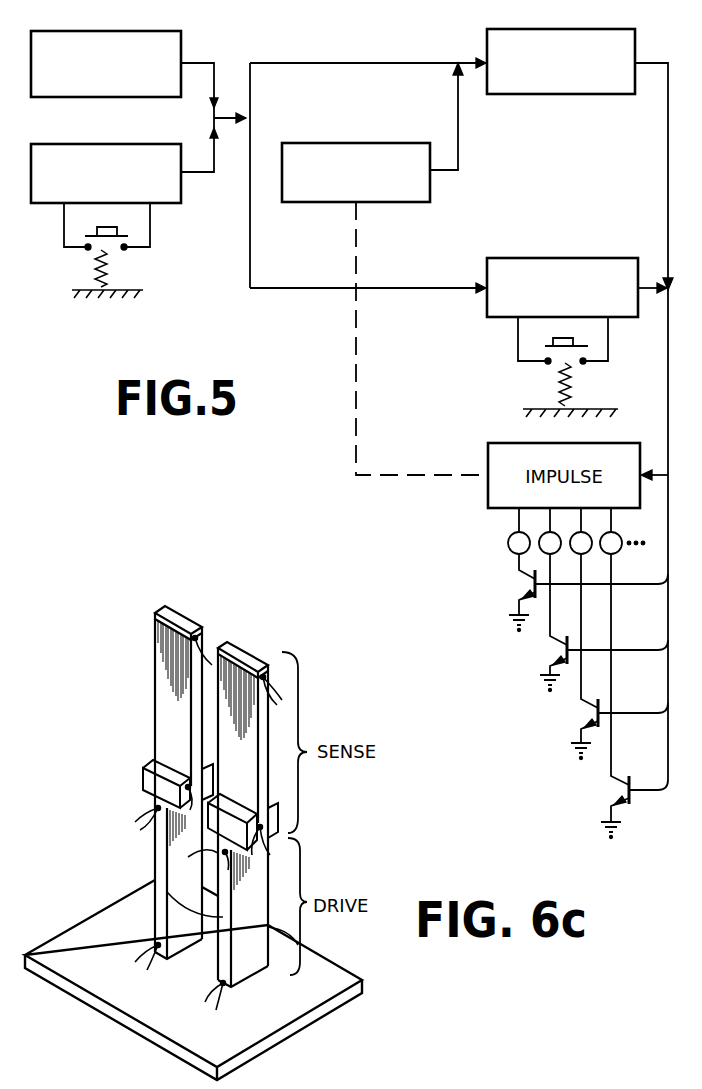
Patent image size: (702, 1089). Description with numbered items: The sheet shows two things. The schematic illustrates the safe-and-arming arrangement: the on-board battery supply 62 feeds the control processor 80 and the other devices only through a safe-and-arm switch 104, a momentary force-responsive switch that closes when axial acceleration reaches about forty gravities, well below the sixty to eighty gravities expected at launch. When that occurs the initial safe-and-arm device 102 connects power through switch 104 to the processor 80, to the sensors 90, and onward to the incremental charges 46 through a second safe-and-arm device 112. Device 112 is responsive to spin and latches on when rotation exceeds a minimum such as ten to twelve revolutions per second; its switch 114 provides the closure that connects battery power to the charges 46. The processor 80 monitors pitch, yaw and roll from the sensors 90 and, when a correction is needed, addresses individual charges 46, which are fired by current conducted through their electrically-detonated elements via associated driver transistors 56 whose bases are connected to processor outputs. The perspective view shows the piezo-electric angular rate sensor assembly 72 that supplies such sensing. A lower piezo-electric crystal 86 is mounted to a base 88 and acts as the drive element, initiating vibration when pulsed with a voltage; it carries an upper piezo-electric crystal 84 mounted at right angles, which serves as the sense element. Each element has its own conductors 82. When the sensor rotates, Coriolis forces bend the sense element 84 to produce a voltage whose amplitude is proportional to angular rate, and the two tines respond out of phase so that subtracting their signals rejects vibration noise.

In FIG. 5, the batteries 62 is at (182, 34).
In FIG. 5, the initial safe-and-arm device 102 is at (98, 145).
In FIG. 5, the safe-and-arm switch 104 is at (126, 250).
In FIG. 5, the sensors 90 is at (342, 143).
In FIG. 5, the control processor 80 is at (636, 42).
In FIG. 5, the second safe-and-arm device 112 is at (577, 258).
In FIG. 5, the switch 114 is at (599, 364).
In FIG. 5, the incremental charges 46 is at (506, 544).
In FIG. 5, the driver transistors 56 is at (629, 797).
In FIG. 6C, the angular rate sensor assembly 72 is at (300, 1048).
In FIG. 6C, the conductors 82 is at (263, 675).
In FIG. 6C, the upper piezo-electric crystal 84 is at (164, 712).
In FIG. 6C, the lower piezo-electric crystal 86 is at (156, 878).
In FIG. 6C, the base 88 is at (320, 967).